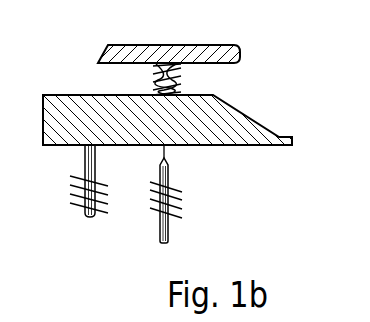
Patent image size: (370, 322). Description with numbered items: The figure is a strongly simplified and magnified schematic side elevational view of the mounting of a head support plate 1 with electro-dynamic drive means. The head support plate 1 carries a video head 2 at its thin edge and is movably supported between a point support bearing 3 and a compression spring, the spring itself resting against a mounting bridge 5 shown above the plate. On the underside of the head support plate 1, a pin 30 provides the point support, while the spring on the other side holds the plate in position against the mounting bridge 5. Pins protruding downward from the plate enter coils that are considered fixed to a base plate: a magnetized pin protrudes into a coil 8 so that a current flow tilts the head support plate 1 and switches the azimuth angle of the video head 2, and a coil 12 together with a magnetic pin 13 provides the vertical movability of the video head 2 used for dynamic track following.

The head support plate 1 is at (77, 132).
The video head 2 is at (283, 113).
The point support bearing 3 is at (181, 82).
The mounting bridge 5 is at (98, 62).
The coil 8 is at (183, 210).
The coil 12 is at (105, 215).
The magnetic pin 13 is at (88, 217).
The pin 30 is at (167, 235).